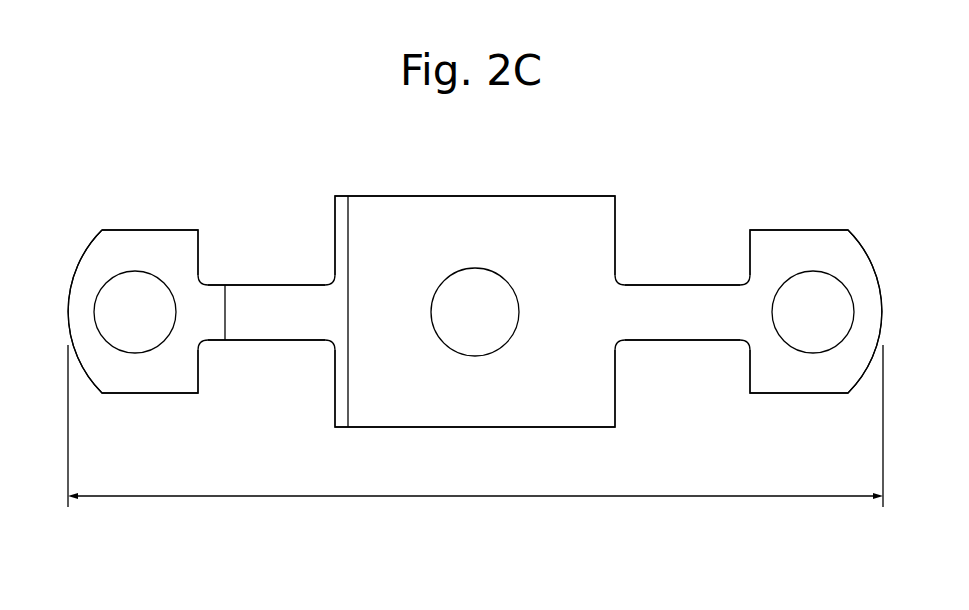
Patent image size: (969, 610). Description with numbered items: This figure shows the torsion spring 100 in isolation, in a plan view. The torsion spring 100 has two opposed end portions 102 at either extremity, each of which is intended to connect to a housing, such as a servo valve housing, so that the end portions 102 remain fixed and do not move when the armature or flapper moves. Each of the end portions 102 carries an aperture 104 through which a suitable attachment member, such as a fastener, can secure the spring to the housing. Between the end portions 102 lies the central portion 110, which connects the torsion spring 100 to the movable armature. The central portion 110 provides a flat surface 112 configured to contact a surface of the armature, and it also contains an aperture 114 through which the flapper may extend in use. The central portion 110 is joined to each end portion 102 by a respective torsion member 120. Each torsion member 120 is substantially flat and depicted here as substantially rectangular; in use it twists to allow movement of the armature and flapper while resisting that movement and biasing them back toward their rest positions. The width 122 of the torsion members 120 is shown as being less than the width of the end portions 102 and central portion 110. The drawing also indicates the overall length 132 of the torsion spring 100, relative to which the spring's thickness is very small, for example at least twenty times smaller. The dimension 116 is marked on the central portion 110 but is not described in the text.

The torsion spring 100 is at (724, 524).
The end portions 102 is at (147, 242).
The apertures 104 is at (135, 335).
The central portion 110 is at (408, 405).
The flat surface 112 is at (558, 225).
The aperture 114 is at (475, 283).
The central portion height 116 is at (348, 460).
The torsion members 120 is at (272, 317).
The width 122 is at (225, 368).
The length 132 is at (240, 496).